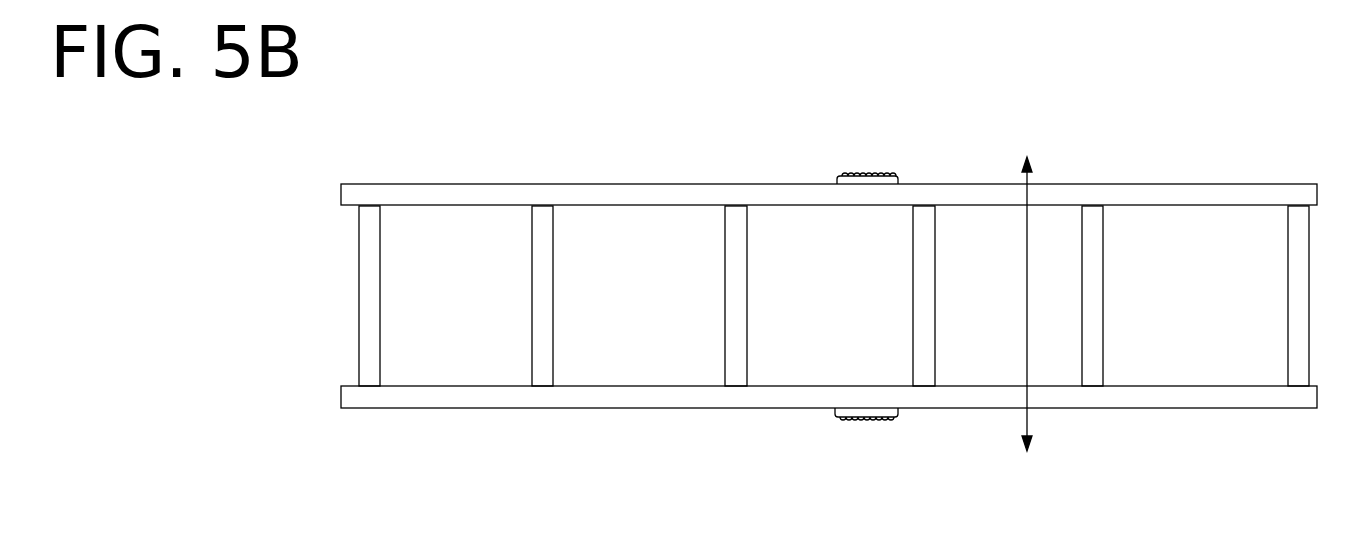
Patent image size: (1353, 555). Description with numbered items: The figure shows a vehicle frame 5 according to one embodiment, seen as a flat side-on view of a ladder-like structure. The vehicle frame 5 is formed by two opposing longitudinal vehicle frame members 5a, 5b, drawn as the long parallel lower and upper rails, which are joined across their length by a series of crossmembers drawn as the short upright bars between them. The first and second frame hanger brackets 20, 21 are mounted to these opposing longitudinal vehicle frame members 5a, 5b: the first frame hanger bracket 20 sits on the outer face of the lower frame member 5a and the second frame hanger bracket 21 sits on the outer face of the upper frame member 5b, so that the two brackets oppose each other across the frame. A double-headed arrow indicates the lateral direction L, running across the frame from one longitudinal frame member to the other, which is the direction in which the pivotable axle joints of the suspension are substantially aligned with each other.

The vehicle frame 5 is at (829, 294).
The longitudinal vehicle frame member 5a is at (1111, 408).
The longitudinal vehicle frame member 5b is at (1130, 184).
The first frame hanger bracket 20 is at (870, 418).
The second frame hanger bracket 21 is at (873, 176).
The lateral direction L is at (1027, 298).